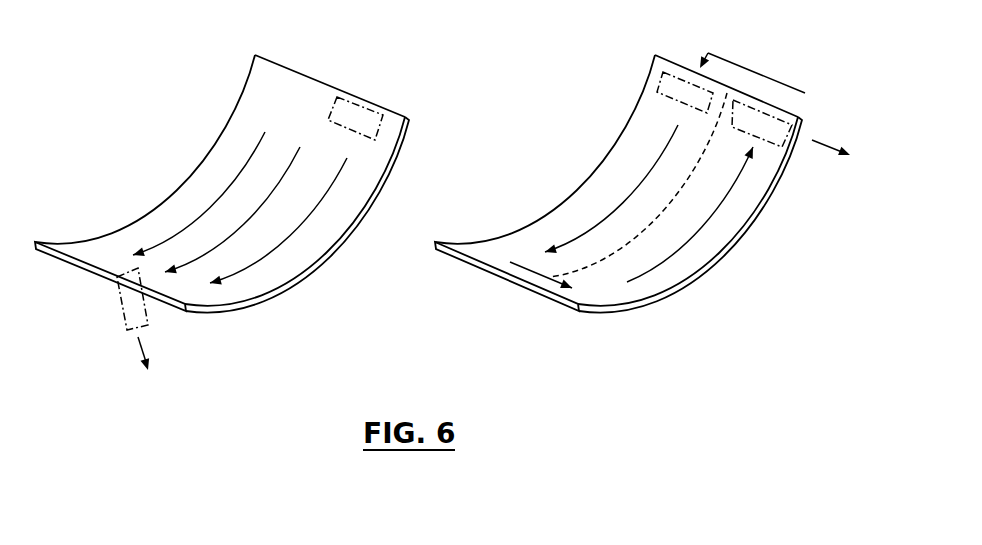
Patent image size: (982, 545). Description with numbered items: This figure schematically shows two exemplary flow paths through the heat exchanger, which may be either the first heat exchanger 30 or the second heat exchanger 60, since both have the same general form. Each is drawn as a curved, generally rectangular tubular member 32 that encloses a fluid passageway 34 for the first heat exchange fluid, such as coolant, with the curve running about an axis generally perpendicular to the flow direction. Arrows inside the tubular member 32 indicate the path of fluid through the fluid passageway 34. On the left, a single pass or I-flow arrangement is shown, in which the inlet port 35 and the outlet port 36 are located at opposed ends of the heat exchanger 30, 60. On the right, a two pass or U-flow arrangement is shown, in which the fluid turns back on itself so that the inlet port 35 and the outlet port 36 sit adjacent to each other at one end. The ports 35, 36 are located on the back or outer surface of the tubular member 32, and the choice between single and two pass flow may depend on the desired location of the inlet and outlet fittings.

The first heat exchanger 30 is at (445, 161).
The second heat exchanger 60 is at (352, 50).
The tubular member 32 is at (208, 161).
The fluid passageway 34 is at (287, 240).
The inlet port 35 is at (416, 140).
The outlet port 36 is at (140, 338).